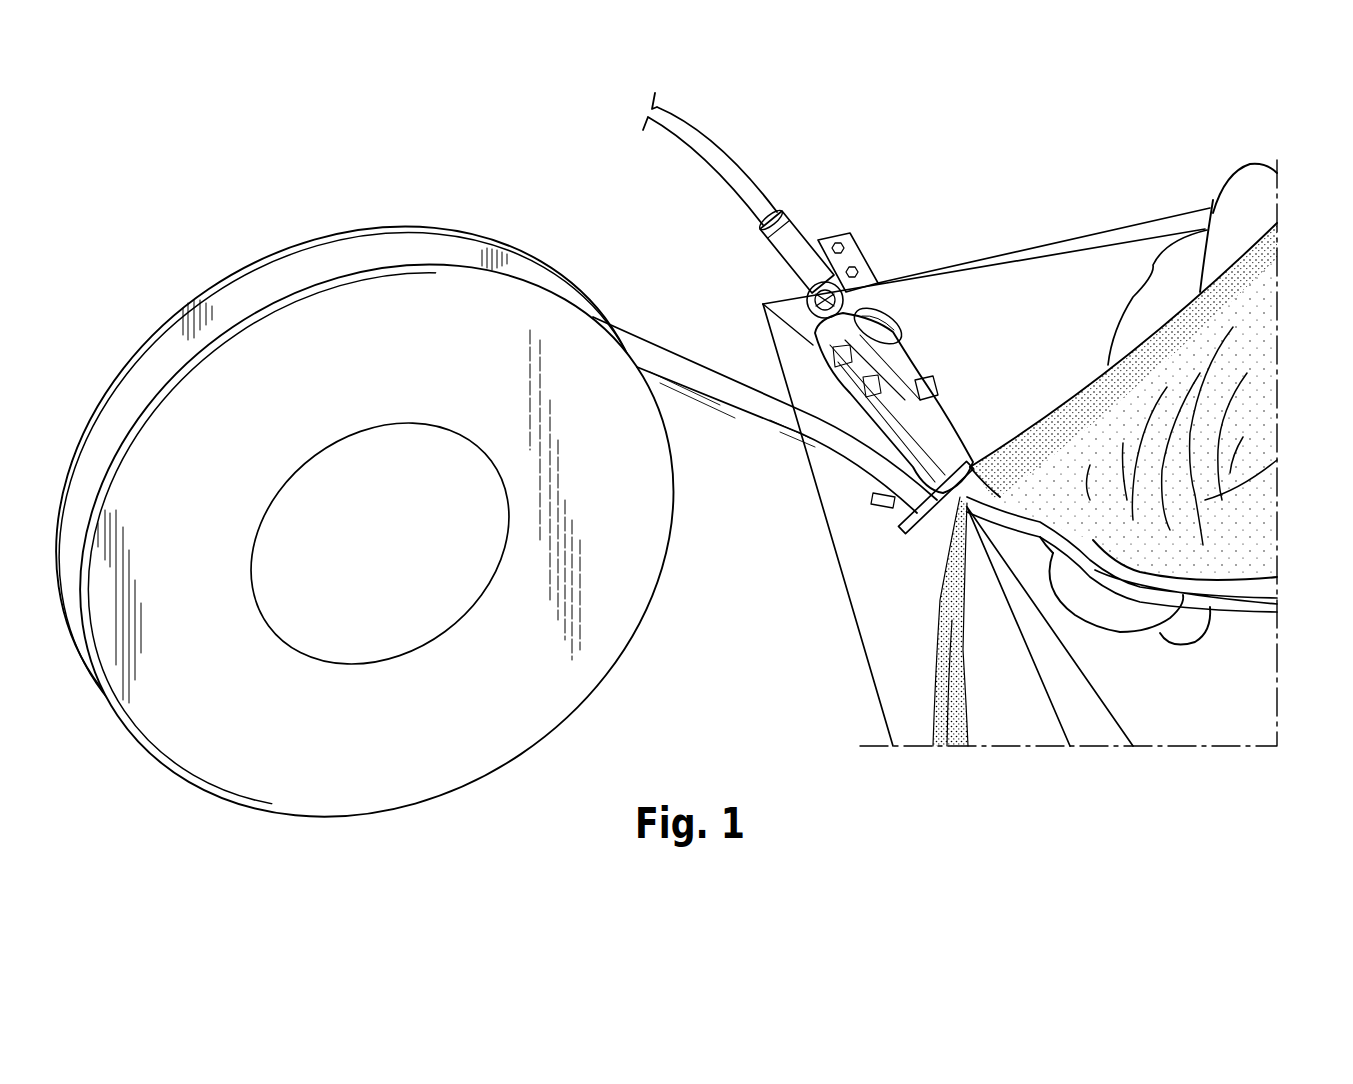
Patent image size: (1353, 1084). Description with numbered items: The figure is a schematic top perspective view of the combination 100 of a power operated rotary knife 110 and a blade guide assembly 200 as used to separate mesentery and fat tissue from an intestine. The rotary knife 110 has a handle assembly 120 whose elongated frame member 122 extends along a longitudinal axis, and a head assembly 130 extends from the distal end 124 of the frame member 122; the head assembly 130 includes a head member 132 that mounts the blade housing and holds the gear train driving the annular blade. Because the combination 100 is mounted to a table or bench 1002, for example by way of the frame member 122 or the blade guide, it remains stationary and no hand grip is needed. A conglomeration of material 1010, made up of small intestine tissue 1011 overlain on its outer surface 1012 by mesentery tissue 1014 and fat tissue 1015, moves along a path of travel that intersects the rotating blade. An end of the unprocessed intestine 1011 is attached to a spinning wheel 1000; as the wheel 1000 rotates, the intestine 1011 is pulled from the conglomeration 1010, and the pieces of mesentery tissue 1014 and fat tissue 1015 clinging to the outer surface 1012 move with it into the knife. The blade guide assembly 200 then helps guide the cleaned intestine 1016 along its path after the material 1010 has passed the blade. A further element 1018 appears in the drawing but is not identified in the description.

The combination of a power operated rotary knife and a blade guide assembly 100 is at (929, 378).
The power operated rotary knife 110 is at (897, 315).
The handle assembly 120 is at (867, 226).
The elongated frame member 122 is at (828, 293).
The distal end 124 is at (782, 308).
The head assembly 130 is at (900, 319).
The head member 132 is at (907, 334).
The blade guide assembly 200 is at (777, 363).
The spinning wheel 1000 is at (421, 310).
The table or bench 1002 is at (1018, 285).
The conglomeration of material 1010 is at (1155, 423).
The intestine 1011 is at (1085, 552).
The outer surface 1012 is at (1097, 607).
The mesentery tissue 1014 is at (1042, 467).
The fat tissue 1015 is at (1143, 520).
The cleaned intestine 1016 is at (740, 402).
The sealant strand 1018 is at (940, 607).